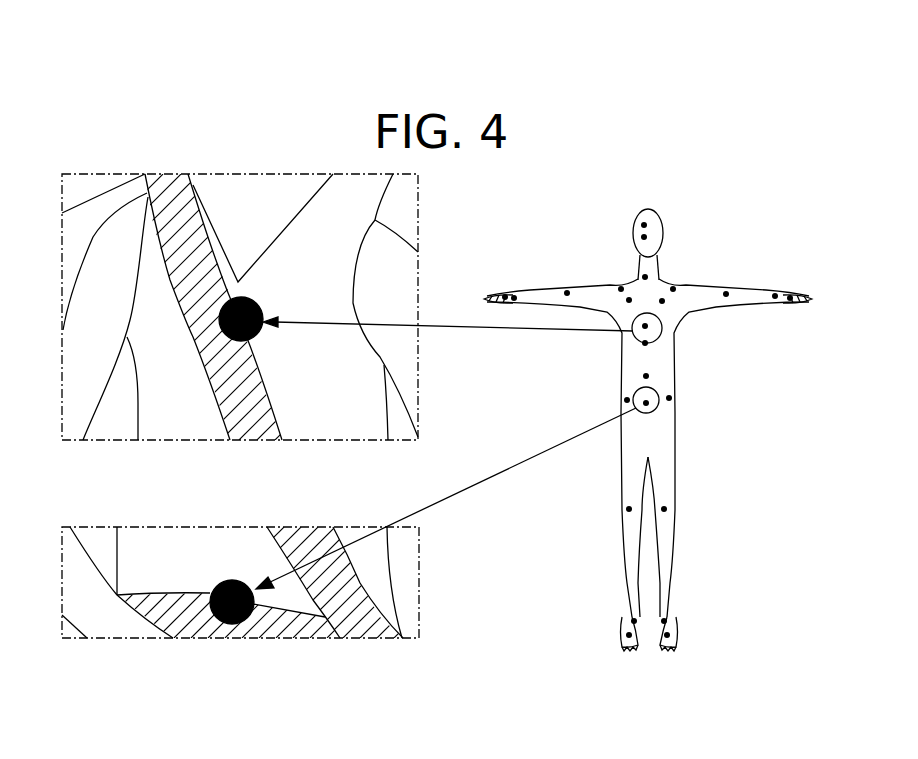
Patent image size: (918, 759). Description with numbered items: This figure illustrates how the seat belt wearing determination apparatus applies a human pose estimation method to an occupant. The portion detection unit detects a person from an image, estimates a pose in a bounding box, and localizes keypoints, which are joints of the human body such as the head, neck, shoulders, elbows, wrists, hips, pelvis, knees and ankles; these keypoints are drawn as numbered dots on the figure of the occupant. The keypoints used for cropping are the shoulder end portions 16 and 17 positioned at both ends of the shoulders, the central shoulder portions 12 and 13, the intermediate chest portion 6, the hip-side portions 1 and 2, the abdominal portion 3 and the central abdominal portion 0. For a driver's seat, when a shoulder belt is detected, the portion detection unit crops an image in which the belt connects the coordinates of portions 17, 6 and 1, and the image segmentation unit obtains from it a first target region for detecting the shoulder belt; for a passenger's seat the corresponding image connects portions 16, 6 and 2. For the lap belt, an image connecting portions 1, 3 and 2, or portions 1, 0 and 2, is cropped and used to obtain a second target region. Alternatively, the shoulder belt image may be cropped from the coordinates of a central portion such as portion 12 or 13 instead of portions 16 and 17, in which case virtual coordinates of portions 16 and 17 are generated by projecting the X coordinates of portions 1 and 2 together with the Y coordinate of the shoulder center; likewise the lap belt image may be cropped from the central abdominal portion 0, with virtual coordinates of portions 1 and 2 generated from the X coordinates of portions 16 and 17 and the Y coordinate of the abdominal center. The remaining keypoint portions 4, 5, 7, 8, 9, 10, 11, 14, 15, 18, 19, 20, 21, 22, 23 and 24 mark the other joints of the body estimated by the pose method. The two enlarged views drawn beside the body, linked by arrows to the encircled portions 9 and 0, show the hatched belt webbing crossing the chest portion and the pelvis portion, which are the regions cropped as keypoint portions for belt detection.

The central abdomen keypoint portion 0 is at (646, 395).
The keypoint portion 1 is at (621, 399).
The keypoint portion 2 is at (675, 399).
The keypoint portion 3 is at (652, 376).
The body point 4 (left knee) 4 is at (622, 509).
The body point 5 (right knee) 5 is at (671, 509).
The keypoint portion 6 is at (643, 351).
The body point 7 (left ankle) 7 is at (628, 619).
The body point 8 (right ankle) 8 is at (670, 619).
The body point 9 (chest center) 9 is at (651, 327).
The body point 10 (left foot) 10 is at (615, 636).
The body point 11 (right foot) 11 is at (681, 636).
The central shoulder keypoint portion 12 is at (656, 274).
The central shoulder keypoint portion 13 is at (628, 309).
The body point 14 (right chest) 14 is at (672, 302).
The body point 15 (head upper) 15 is at (655, 226).
The shoulder end keypoint portion 16 is at (622, 280).
The shoulder end keypoint portion 17 is at (684, 287).
The body point 18 (left elbow) 18 is at (568, 284).
The body point 19 (right elbow) 19 is at (737, 294).
The body point 20 (left wrist) 20 is at (520, 307).
The body point 21 (right wrist) 21 is at (775, 287).
The body point 22 (left hand) 22 is at (503, 286).
The body point 23 (right hand) 23 is at (793, 307).
The body point 24 (head lower) 24 is at (655, 240).